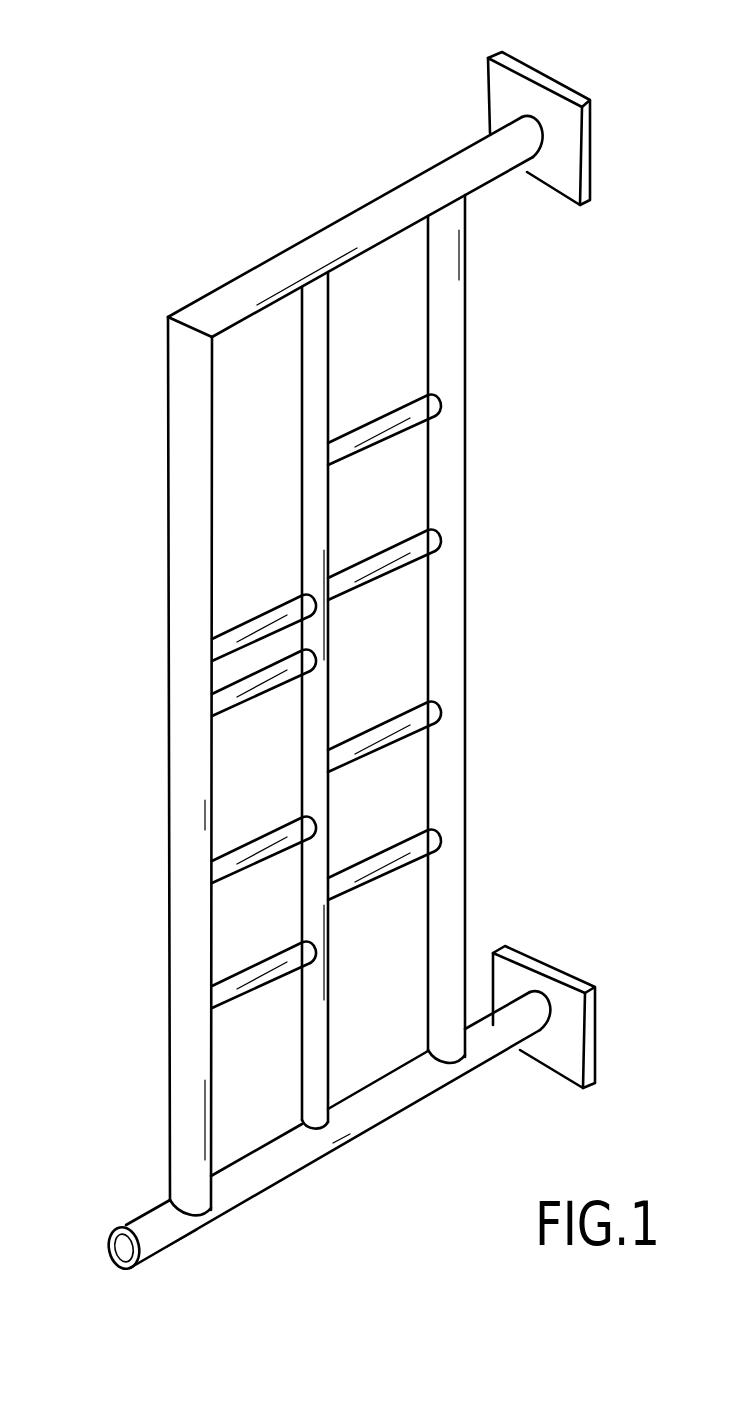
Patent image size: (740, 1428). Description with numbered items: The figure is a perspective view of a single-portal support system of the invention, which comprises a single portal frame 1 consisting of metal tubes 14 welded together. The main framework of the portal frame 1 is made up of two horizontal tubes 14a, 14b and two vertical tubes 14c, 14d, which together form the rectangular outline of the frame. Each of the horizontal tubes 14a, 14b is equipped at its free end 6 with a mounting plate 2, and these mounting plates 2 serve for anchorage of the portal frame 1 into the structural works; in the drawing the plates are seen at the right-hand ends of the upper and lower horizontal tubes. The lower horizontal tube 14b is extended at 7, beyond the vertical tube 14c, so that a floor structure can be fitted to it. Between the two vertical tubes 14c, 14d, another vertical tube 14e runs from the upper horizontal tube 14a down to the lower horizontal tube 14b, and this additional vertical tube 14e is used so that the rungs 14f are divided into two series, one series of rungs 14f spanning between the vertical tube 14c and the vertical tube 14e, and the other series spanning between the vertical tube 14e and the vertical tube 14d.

The portal frame 1 is at (527, 385).
The mounting plates 2 is at (547, 82).
The free end 6 is at (527, 143).
The extension 7 is at (163, 1232).
The metal tubes 14 is at (232, 265).
The upper horizontal tube 14a is at (372, 214).
The lower horizontal tube 14b is at (303, 1153).
The vertical tube 14c is at (177, 413).
The vertical tube 14d is at (455, 497).
The vertical tube 14e is at (325, 395).
The rungs 14f is at (378, 735).